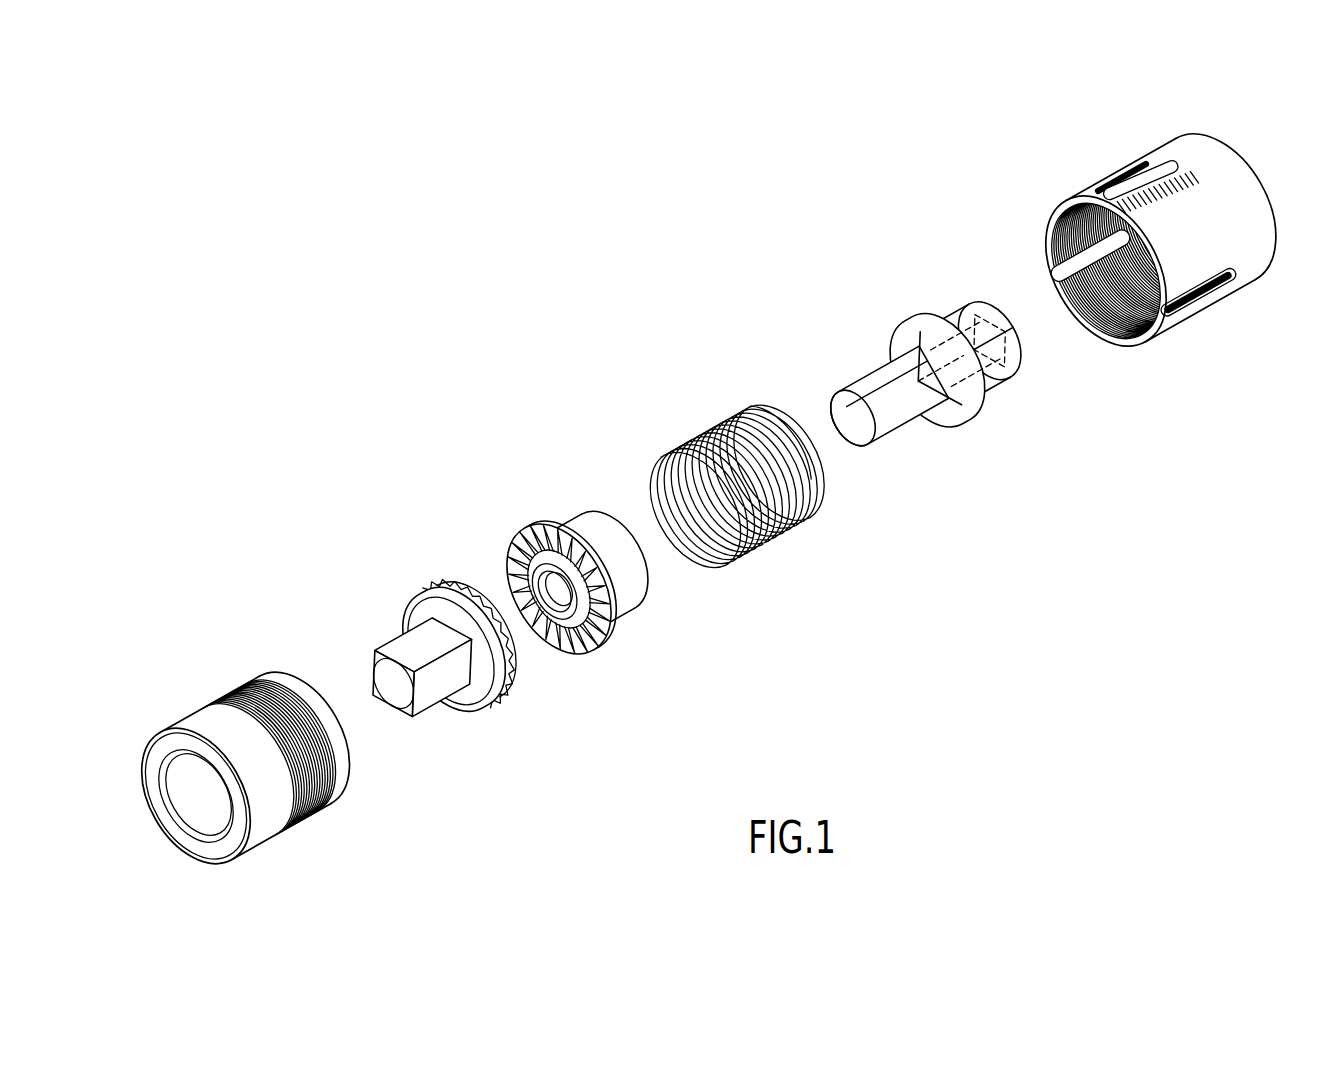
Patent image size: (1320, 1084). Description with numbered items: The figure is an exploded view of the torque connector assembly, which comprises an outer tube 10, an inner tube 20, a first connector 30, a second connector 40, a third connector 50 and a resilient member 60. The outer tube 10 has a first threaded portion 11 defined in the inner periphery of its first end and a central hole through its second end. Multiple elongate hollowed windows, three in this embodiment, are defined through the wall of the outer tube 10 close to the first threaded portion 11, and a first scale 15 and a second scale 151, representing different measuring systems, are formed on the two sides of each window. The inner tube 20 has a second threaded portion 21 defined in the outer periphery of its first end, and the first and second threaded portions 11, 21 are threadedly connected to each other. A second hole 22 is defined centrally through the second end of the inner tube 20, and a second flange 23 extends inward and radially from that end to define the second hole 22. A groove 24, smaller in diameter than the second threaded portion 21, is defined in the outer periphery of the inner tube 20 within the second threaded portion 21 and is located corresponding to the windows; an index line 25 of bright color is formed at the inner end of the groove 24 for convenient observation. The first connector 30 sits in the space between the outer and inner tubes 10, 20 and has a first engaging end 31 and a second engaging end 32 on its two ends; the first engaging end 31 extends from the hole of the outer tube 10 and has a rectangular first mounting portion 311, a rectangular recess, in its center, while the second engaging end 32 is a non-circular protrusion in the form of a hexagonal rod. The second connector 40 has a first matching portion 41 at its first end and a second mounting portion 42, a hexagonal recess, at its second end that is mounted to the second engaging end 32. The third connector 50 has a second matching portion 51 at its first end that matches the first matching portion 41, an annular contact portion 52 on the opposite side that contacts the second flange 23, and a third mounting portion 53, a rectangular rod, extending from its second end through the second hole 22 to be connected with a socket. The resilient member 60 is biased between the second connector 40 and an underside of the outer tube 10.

The outer tube 10 is at (1237, 290).
The first threaded portion 11 is at (1065, 225).
The first scale 15 is at (1118, 183).
The second scale 151 is at (1195, 185).
The inner tube 20 is at (255, 840).
The second threaded portion 21 is at (318, 805).
The second hole 22 is at (163, 788).
The second flange 23 is at (190, 825).
The groove 24 is at (222, 700).
The index line 25 is at (300, 825).
The first connector 30 is at (970, 412).
The first engaging end 31 is at (1000, 385).
The first mounting portion 311 is at (960, 302).
The second engaging end 32 is at (860, 380).
The second connector 40 is at (627, 600).
The first matching portion 41 is at (580, 642).
The second mounting portion 42 is at (548, 582).
The third connector 50 is at (490, 700).
The second matching portion 51 is at (505, 675).
The annular contact portion 52 is at (425, 605).
The third mounting portion 53 is at (393, 648).
The resilient member 60 is at (800, 520).